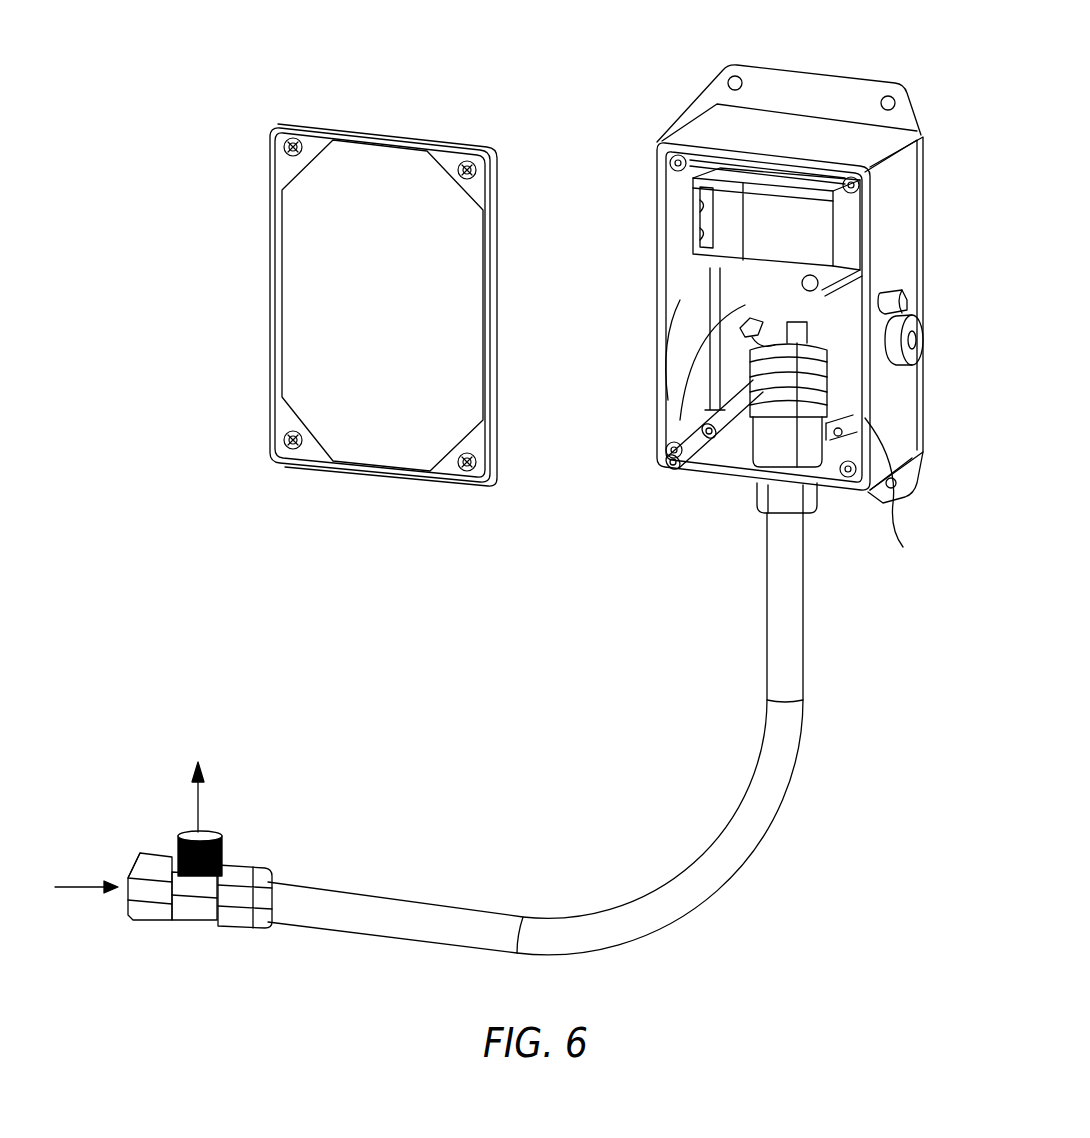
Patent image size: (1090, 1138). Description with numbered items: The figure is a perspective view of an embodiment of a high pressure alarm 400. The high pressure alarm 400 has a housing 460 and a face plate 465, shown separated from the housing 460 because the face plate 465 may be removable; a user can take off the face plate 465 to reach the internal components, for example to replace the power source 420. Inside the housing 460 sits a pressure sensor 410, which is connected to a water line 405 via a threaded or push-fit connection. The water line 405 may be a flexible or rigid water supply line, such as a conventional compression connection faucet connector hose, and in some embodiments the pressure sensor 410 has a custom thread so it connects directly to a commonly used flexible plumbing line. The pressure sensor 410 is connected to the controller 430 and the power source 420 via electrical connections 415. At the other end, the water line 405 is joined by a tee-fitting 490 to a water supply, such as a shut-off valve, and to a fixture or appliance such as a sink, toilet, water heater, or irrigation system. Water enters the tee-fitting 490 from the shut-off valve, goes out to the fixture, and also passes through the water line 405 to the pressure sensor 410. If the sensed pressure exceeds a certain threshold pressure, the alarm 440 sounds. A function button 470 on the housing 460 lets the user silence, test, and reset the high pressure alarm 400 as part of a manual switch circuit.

The high pressure alarm 400 is at (497, 95).
The water line 405 is at (779, 598).
The pressure sensor 410 is at (727, 483).
The electrical connections 415 is at (745, 305).
The power source 420 is at (793, 222).
The controller 430 is at (891, 499).
The alarm 440 is at (912, 367).
The housing 460 is at (713, 127).
The face plate 465 is at (405, 450).
The function button 470 is at (895, 290).
The tee-fitting 490 is at (203, 920).